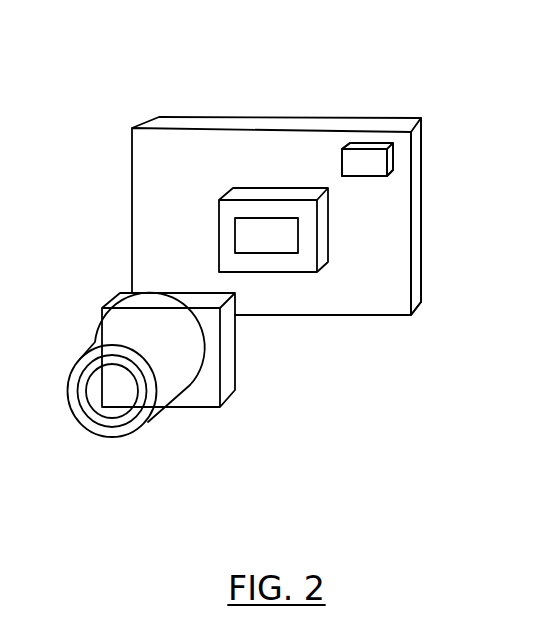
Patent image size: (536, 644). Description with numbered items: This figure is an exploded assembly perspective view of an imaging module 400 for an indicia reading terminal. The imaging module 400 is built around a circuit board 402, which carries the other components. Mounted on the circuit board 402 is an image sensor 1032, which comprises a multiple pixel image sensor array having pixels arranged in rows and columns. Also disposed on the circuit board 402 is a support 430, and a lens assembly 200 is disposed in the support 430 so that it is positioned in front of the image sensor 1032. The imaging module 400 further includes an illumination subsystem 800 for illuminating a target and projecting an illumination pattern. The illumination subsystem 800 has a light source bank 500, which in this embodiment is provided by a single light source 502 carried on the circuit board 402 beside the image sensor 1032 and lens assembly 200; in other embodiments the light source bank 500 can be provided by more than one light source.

The imaging module 400 is at (285, 101).
The circuit board 402 is at (388, 293).
The single light source 502 is at (378, 165).
The illumination subsystem 800 is at (370, 183).
The light source bank 500 is at (367, 159).
The image sensor 1032 is at (298, 263).
The support 430 is at (167, 393).
The lens assembly 200 is at (113, 402).